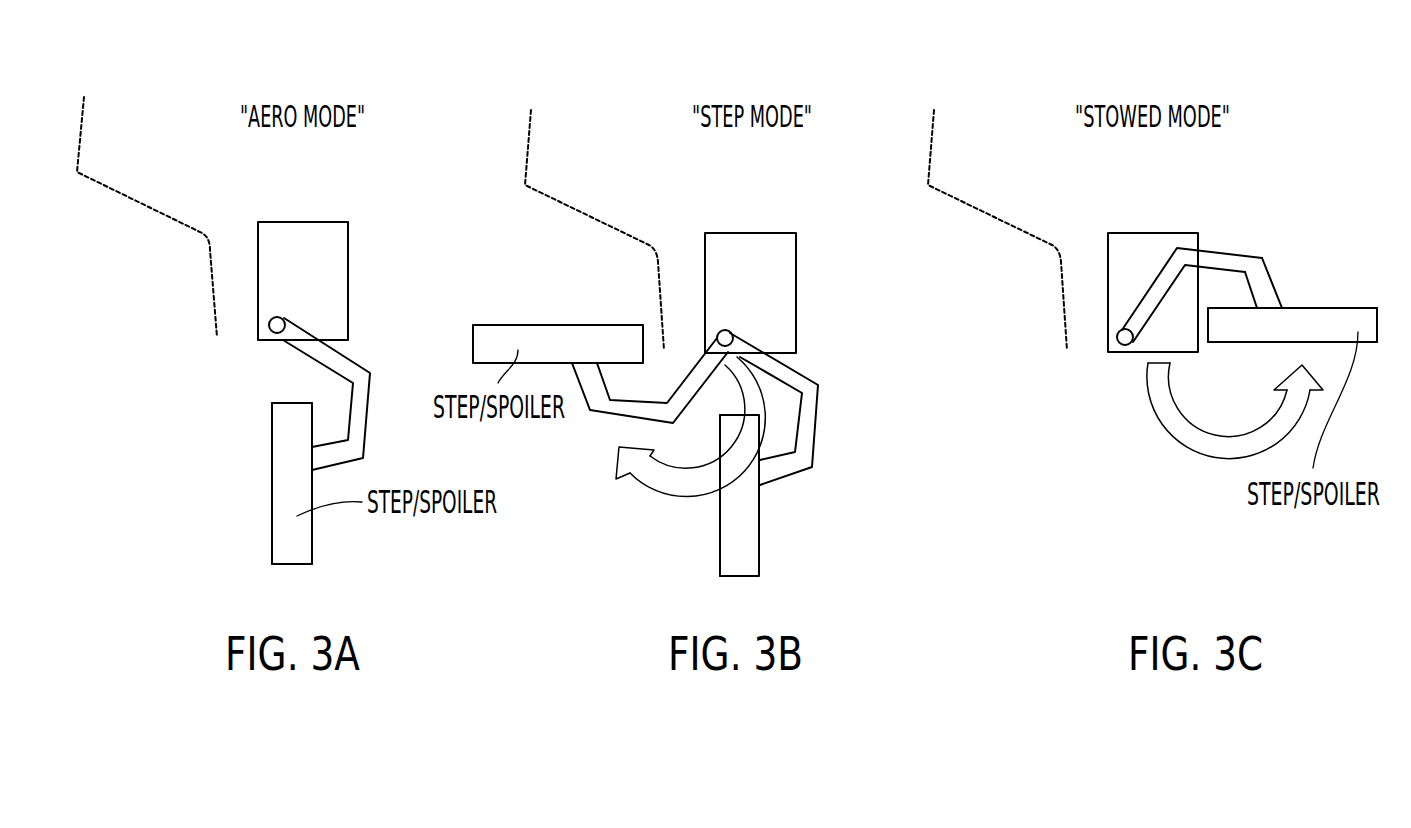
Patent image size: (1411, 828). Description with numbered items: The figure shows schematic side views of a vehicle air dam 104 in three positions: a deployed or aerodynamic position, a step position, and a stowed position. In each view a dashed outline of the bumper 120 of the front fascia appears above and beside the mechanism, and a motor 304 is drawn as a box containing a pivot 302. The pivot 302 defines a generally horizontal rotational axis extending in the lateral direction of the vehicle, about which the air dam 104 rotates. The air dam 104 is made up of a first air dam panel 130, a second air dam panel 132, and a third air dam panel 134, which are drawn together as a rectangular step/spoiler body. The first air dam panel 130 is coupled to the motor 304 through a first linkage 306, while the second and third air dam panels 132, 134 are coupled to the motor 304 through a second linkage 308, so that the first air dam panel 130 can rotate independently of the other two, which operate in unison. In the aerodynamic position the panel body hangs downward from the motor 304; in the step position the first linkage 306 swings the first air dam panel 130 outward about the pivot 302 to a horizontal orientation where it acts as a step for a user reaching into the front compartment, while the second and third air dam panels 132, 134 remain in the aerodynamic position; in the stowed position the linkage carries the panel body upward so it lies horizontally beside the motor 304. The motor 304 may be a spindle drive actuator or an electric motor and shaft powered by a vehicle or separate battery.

In FIG. 3A, the air dam 104 is at (228, 406).
In FIG. 3B, the air dam 104 is at (485, 277).
In FIG. 3C, the air dam 104 is at (1061, 189).
In FIG. 3A, the bumper 120 is at (78, 142).
In FIG. 3B, the bumper 120 is at (525, 153).
In FIG. 3C, the bumper 120 is at (928, 152).
In FIG. 3A, the first air dam panel 130 is at (272, 484).
In FIG. 3B, the first air dam panel 130 is at (565, 325).
In FIG. 3C, the first air dam panel 130 is at (1327, 307).
In FIG. 3A, the second air dam panel 132 is at (272, 445).
In FIG. 3B, the second air dam panel 132 is at (720, 520).
In FIG. 3C, the second air dam panel 132 is at (1372, 305).
In FIG. 3A, the third air dam panel 134 is at (272, 528).
In FIG. 3B, the third air dam panel 134 is at (720, 560).
In FIG. 3C, the third air dam panel 134 is at (1345, 307).
In FIG. 3A, the pivot 302 is at (270, 320).
In FIG. 3B, the pivot 302 is at (718, 333).
In FIG. 3C, the pivot 302 is at (1119, 332).
In FIG. 3A, the motor 304 is at (307, 222).
In FIG. 3B, the motor 304 is at (757, 233).
In FIG. 3C, the motor 304 is at (1150, 245).
In FIG. 3B, the first linkage 306 is at (588, 413).
In FIG. 3C, the first linkage 306 is at (1228, 253).
In FIG. 3B, the second linkage 308 is at (820, 407).
In FIG. 3C, the second linkage 308 is at (1250, 257).